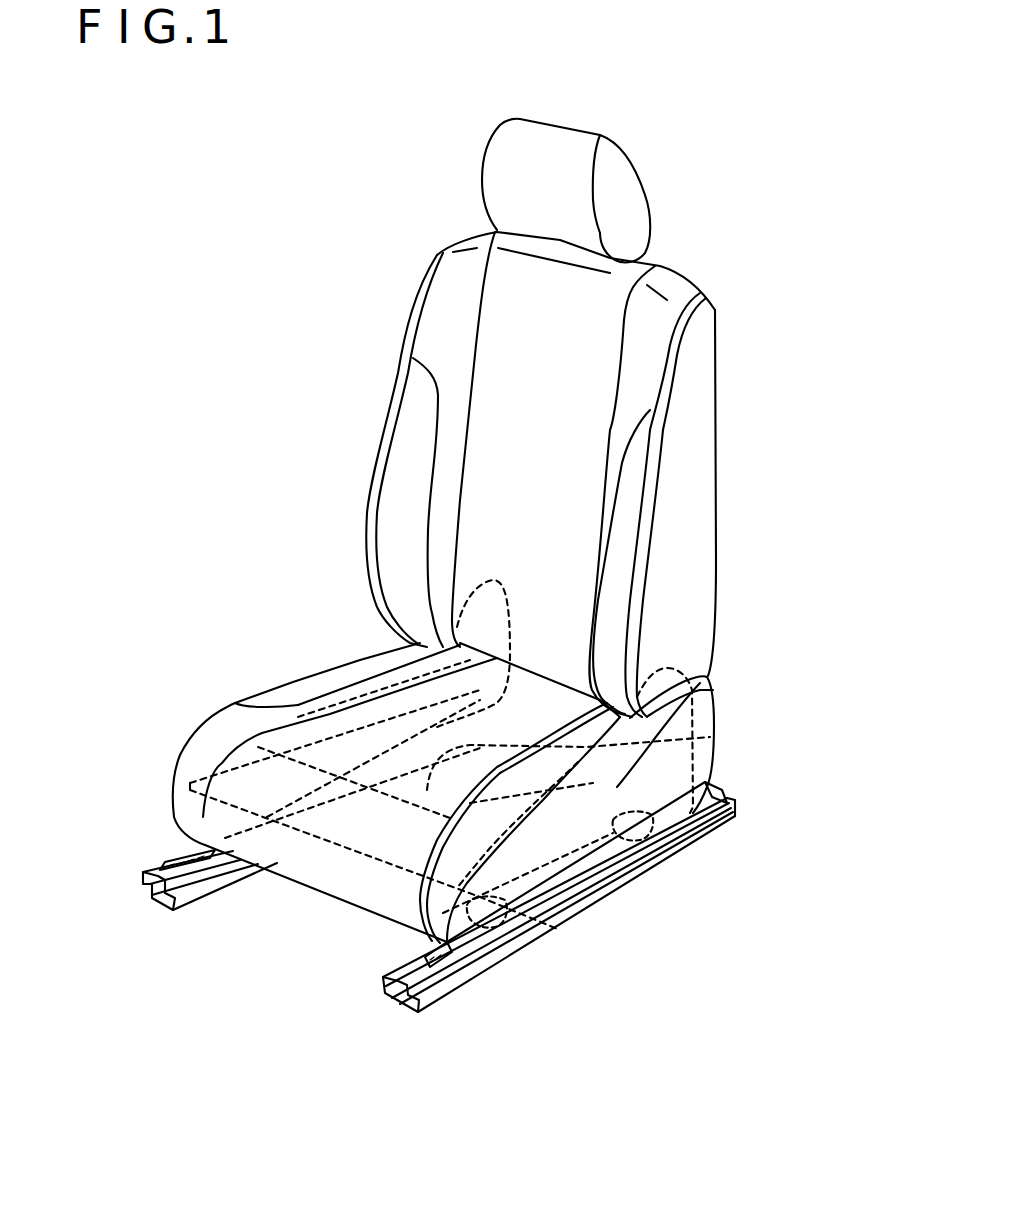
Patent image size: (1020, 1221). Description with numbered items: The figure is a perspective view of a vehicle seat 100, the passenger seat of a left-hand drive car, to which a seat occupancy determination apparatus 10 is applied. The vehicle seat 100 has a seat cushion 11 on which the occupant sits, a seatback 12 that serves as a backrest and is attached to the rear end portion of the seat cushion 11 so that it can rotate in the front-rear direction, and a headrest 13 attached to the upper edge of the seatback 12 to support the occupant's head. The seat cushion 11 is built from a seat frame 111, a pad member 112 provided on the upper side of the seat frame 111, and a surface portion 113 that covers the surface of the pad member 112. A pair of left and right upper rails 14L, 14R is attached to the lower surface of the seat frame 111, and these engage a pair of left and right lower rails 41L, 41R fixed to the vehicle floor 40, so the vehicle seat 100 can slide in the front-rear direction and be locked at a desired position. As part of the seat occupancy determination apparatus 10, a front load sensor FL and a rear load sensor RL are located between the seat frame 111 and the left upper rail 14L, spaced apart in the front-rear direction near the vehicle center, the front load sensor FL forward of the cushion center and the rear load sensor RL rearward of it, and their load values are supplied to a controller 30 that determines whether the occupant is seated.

The vehicle seat 100 is at (803, 284).
The seat occupancy determination apparatus 10 is at (655, 886).
The seat cushion 11 is at (437, 763).
The seatback 12 is at (700, 430).
The headrest 13 is at (620, 180).
The seat frame 111 is at (592, 897).
The pad member 112 is at (293, 693).
The surface portion 113 is at (222, 708).
The controller 30 is at (710, 737).
The vehicle floor 40 is at (201, 1057).
The right lower rail 41R is at (157, 863).
The left lower rail 41L is at (490, 962).
The right upper rail 14R is at (205, 845).
The left upper rail 14L is at (452, 953).
The rear load sensor RL is at (667, 833).
The front load sensor FL is at (550, 937).